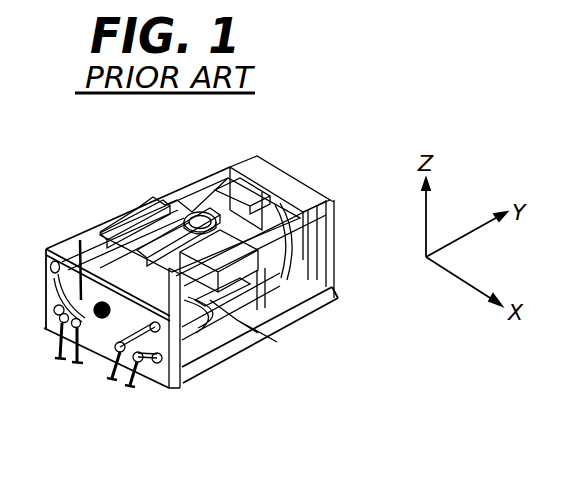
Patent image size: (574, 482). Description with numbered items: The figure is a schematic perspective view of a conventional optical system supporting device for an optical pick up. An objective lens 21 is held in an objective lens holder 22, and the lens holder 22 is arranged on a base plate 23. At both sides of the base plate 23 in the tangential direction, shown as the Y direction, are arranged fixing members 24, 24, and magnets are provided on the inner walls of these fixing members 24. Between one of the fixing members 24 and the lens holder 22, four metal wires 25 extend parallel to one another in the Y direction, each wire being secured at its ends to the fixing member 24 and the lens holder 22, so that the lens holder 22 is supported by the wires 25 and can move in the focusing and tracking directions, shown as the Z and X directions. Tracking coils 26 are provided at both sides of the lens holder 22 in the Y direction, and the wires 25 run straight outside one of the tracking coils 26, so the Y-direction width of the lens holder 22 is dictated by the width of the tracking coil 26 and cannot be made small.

The objective lens 21 is at (178, 200).
The objective lens holder 22 is at (148, 208).
The base plate 23 is at (186, 365).
The fixing member 24 is at (336, 236).
The metal wire 25 is at (80, 240).
The tracking coil 26 is at (224, 347).